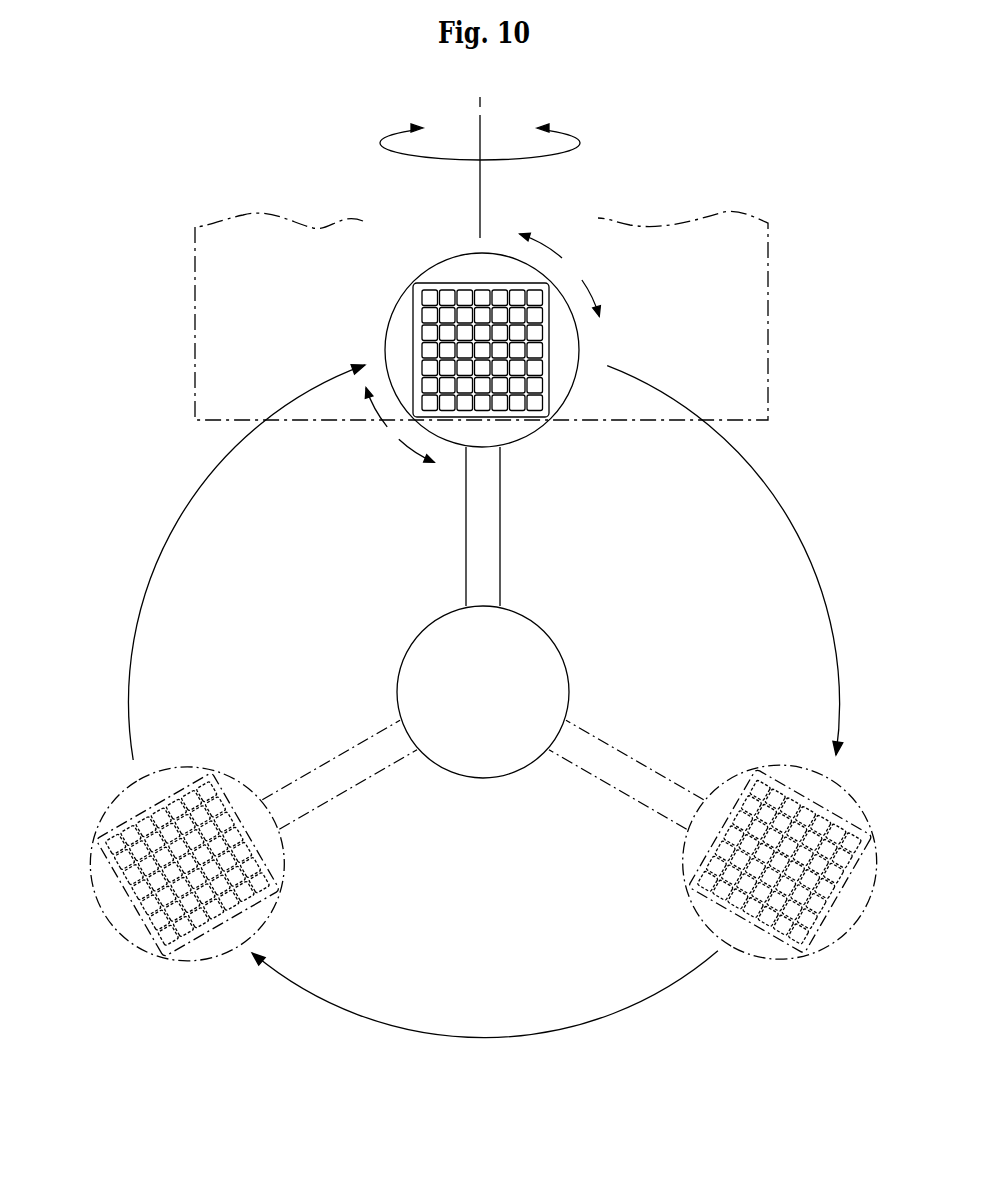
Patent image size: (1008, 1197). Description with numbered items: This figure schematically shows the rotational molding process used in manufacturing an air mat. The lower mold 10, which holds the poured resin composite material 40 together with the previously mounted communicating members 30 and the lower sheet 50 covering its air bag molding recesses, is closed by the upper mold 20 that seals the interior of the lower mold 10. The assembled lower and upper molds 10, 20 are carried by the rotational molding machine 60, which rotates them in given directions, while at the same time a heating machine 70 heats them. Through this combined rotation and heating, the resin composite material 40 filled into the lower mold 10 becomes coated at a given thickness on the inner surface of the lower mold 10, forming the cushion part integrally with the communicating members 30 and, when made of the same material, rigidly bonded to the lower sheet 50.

The lower mold 10 is at (413, 308).
The upper mold 20 is at (413, 308).
The communicating member 30 is at (413, 308).
The resin composite material 40 is at (413, 308).
The lower sheet 50 is at (463, 297).
The rotational molding machine 60 is at (442, 550).
The heating machine 70 is at (768, 373).